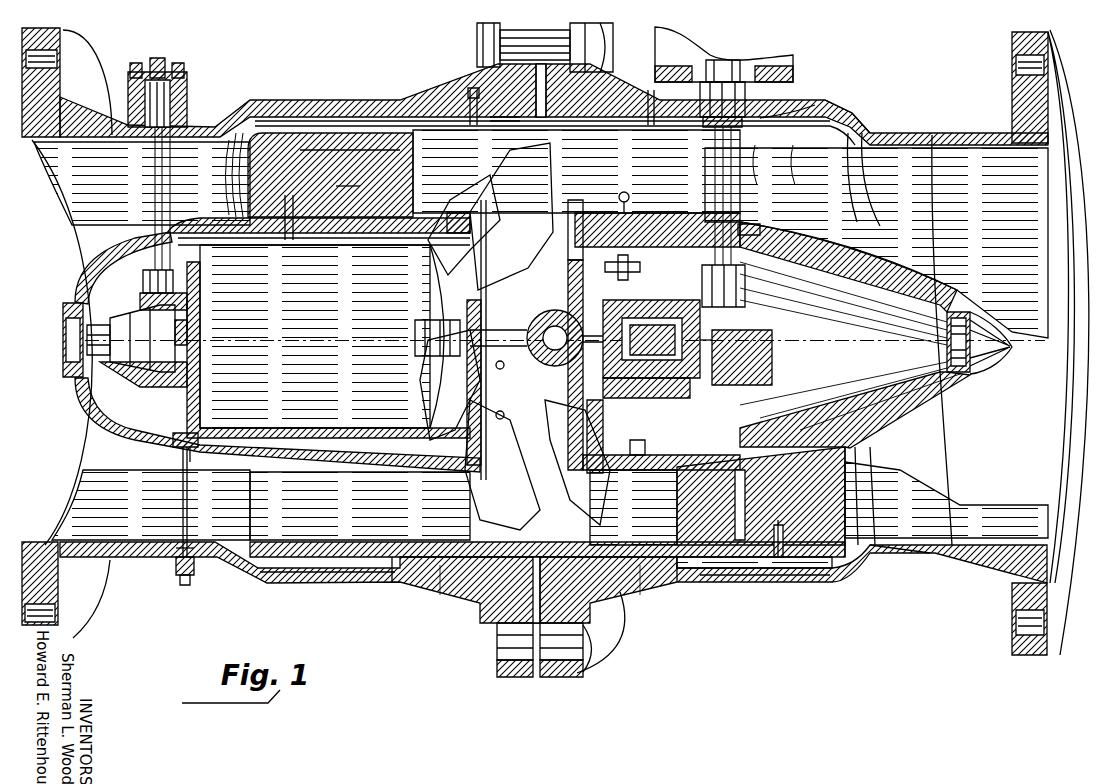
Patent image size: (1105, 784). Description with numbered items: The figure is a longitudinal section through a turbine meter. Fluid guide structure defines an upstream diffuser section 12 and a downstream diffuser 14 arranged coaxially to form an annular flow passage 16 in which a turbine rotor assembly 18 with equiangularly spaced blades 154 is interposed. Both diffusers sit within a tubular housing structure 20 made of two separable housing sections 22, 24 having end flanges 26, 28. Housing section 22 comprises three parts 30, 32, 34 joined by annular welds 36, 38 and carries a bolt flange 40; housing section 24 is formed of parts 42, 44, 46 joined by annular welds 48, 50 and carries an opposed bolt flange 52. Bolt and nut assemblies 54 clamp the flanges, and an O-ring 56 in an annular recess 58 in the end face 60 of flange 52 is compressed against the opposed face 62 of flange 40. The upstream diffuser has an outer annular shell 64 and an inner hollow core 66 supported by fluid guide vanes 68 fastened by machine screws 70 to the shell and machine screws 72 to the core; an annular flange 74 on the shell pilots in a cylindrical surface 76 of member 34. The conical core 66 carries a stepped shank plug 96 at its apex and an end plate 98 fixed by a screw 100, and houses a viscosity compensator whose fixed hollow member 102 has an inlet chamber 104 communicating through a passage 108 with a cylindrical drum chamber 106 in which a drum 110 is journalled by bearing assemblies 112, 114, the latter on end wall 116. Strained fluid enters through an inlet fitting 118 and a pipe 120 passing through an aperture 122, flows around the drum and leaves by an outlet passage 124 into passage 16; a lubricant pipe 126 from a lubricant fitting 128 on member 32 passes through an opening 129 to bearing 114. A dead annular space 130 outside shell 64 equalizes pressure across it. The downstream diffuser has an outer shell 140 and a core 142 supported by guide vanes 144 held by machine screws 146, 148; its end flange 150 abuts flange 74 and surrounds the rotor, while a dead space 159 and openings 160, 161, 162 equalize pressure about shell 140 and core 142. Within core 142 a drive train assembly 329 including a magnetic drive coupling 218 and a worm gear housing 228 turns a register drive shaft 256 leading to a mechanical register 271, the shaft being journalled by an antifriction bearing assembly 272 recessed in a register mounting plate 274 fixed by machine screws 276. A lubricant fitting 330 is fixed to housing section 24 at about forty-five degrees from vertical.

The upstream diffuser section 12 is at (237, 201).
The downstream diffuser section 14 is at (861, 210).
The annular flow passage 16 is at (380, 500).
The turbine rotor assembly 18 is at (602, 201).
The tubular housing structure 20 is at (423, 93).
The housing section 22 is at (276, 99).
The housing section 24 is at (833, 100).
The bolt flange 26 is at (90, 85).
The bolt flange 28 is at (1012, 78).
The housing section part 30 is at (104, 540).
The housing section part 32 is at (276, 590).
The housing section part 34 is at (443, 592).
The annular weld 36 is at (144, 565).
The annular weld 38 is at (392, 588).
The bolt flange 40 is at (497, 672).
The housing section part 42 is at (640, 590).
The housing section part 44 is at (782, 583).
The housing section part 46 is at (966, 568).
The annular weld 48 is at (681, 590).
The annular weld 50 is at (918, 562).
The bolt flange 52 is at (566, 672).
The bolt and nut assemblies 54 is at (475, 45).
The O-ring 56 is at (542, 116).
The annular recess 58 is at (548, 119).
The end face 60 is at (542, 598).
The opposed face 62 is at (534, 586).
The outer annular shell 64 is at (432, 143).
The inner hollow core 66 is at (333, 472).
The fluid guide vanes 68 is at (348, 176).
The machine screws 70 is at (372, 150).
The machine screws 72 is at (290, 206).
The annular flange 74 is at (500, 120).
The cylindrical surface 76 is at (462, 125).
The insert stepped shank plug 96 is at (62, 342).
The transverse end plate 98 is at (470, 478).
The screw 100 is at (455, 212).
The fixed hollow member 102 is at (209, 462).
The inlet chamber 104 is at (137, 388).
The cylindrical drum chamber 106 is at (352, 441).
The passage 108 is at (196, 310).
The drum 110 is at (320, 318).
The antifriction bearing assembly 112 is at (420, 334).
The antifriction bearing assembly 114 is at (188, 330).
The end wall 116 is at (185, 294).
The inlet fitting 118 is at (172, 72).
The pipe 120 is at (156, 206).
The aperture 122 is at (170, 235).
The outlet passage 124 is at (480, 498).
The lubricant pipe 126 is at (181, 478).
The lubricant fitting 128 is at (192, 574).
The opening 129 is at (175, 450).
The annular space 130 is at (350, 584).
The outer annular shell 140 is at (796, 147).
The inner core 142 is at (950, 283).
The guide vanes 144 is at (845, 482).
The machine screws 146 is at (780, 522).
The machine screws 148 is at (728, 482).
The end flange 150 is at (575, 140).
The blades 154 is at (508, 508).
The annular space 159 is at (758, 147).
The opening 160 is at (637, 470).
The opening 161 is at (742, 224).
The opening 162 is at (632, 258).
The magnetic drive coupling 218 is at (663, 349).
The worm gear housing 228 is at (766, 370).
The register drive shaft 256 is at (770, 116).
The mechanical register 271 is at (660, 58).
The antifriction bearing assembly 272 is at (735, 68).
The register mounting plate 274 is at (790, 66).
The machine screws 276 is at (705, 70).
The drive train assembly 329 is at (663, 404).
The lubricant fitting 330 is at (630, 197).